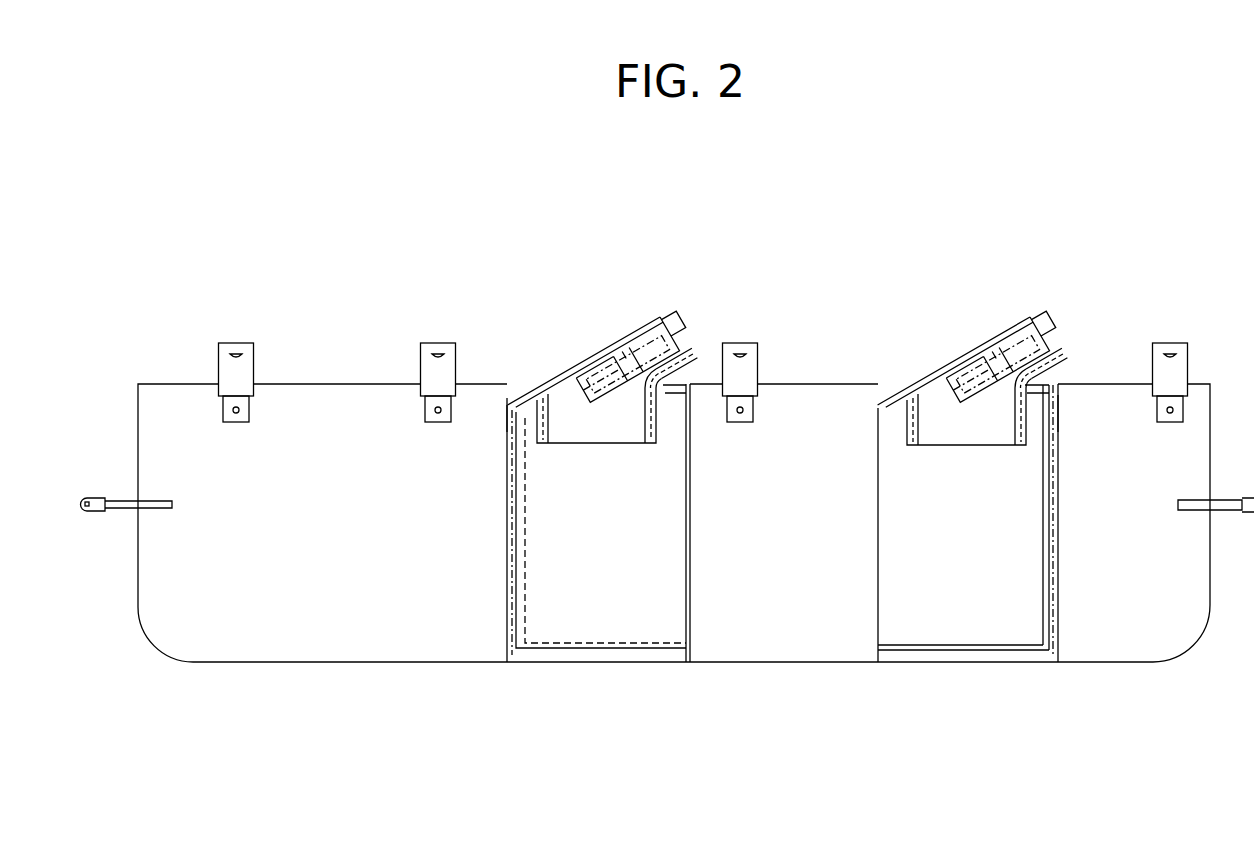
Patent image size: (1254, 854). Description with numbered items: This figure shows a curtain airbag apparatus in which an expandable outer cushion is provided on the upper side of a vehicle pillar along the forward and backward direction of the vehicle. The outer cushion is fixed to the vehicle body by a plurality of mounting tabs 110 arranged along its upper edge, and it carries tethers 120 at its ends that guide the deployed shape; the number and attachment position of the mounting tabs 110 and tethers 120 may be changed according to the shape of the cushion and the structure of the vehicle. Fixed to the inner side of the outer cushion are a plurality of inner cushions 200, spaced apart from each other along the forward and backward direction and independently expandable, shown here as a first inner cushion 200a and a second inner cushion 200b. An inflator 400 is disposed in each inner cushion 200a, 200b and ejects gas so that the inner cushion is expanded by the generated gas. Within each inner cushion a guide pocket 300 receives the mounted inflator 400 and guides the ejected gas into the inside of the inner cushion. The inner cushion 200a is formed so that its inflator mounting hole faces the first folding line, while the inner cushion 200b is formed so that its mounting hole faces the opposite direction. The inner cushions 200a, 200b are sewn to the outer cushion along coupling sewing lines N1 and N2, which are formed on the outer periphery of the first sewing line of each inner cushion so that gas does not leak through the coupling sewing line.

The mounting tab 110 is at (236, 343).
The tether 120 is at (104, 497).
The inner cushion 200 is at (818, 596).
The inner cushion 200a is at (697, 589).
The inner cushion 200b is at (1067, 589).
The guide pocket 300 is at (586, 456).
The inflator 400 is at (638, 325).
The coupling sewing line N1 is at (508, 400).
The coupling sewing line N2 is at (1058, 406).